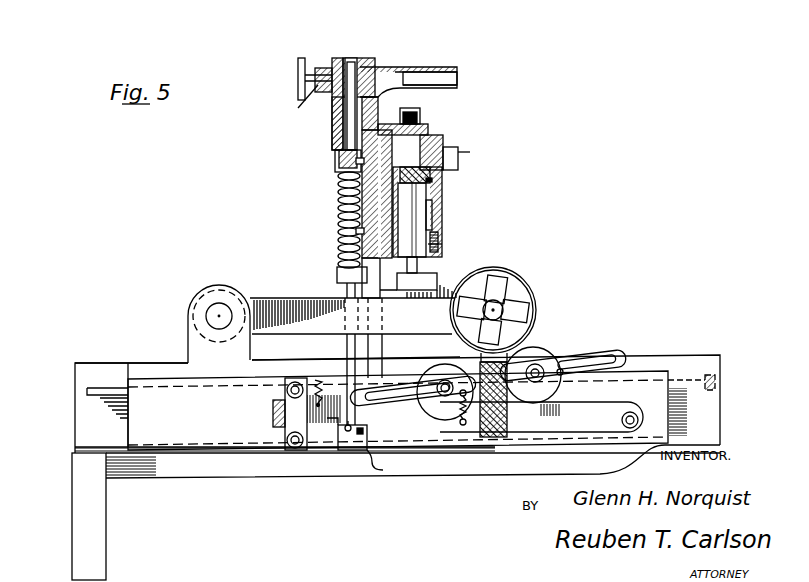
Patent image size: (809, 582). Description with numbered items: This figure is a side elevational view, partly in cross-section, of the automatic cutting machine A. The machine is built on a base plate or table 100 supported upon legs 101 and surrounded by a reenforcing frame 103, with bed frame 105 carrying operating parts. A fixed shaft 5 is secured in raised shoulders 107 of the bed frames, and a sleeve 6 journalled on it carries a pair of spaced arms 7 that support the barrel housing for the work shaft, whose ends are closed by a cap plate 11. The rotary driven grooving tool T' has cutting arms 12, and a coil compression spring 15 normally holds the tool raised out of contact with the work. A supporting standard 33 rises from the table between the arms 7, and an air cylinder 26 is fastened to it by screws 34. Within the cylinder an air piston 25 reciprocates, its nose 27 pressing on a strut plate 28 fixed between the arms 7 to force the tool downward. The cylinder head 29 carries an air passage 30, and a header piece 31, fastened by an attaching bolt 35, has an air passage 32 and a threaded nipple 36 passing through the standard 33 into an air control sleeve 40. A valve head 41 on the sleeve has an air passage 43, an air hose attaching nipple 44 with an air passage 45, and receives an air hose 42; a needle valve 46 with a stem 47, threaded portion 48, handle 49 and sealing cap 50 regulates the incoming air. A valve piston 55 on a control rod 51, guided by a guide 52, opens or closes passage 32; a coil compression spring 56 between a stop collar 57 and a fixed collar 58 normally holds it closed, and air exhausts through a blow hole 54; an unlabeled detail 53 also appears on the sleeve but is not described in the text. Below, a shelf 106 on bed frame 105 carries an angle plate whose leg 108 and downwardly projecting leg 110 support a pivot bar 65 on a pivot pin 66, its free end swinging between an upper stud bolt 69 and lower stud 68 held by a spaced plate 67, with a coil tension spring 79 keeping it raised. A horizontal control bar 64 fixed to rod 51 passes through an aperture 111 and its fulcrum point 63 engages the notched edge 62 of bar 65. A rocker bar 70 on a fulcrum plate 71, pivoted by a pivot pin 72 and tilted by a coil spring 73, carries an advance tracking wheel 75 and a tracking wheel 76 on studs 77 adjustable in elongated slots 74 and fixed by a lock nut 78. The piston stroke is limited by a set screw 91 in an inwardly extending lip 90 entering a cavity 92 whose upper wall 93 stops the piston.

The fixed shaft 5 is at (215, 316).
The sleeve 6 is at (232, 275).
The spaced arms 7 is at (315, 322).
The cap plate 11 is at (527, 278).
The cutting arms 12 is at (490, 285).
The coil compression spring 15 is at (507, 360).
The air piston 25 is at (442, 195).
The air cylinder 26 is at (442, 170).
The nose 27 is at (417, 265).
The strut plate 28 is at (437, 280).
The cylinder head 29 is at (452, 152).
The air passage 30 is at (443, 140).
The header piece 31 is at (432, 130).
The air passage 32 is at (400, 122).
The supporting standard 33 is at (368, 215).
The screws 34 is at (358, 235).
The attaching bolt 35 is at (420, 112).
The threaded nipple 36 is at (380, 122).
The air control sleeve 40 is at (338, 115).
The valve head 41 is at (368, 65).
The air hose 42 is at (445, 72).
The air passage 43 is at (352, 58).
The air hose attaching nipple 44 is at (400, 69).
The air passage 45 is at (420, 72).
The needle valve 46 is at (362, 60).
The stem 47 is at (322, 68).
The threaded portion 48 is at (338, 60).
The handle 49 is at (298, 78).
The sealing cap 50 is at (295, 99).
The control rod 51 is at (347, 290).
The guide 52 is at (337, 165).
The bore 53 is at (340, 125).
The blow hole 54 is at (340, 150).
The valve piston 55 is at (343, 135).
The coil compression spring 56 is at (343, 195).
The stop collar 57 is at (340, 185).
The fixed collar 58 is at (340, 272).
The notched edge 62 is at (335, 428).
The fulcrum point 63 is at (348, 434).
The horizontal control bar 64 is at (360, 436).
The pivot bar 65 is at (541, 417).
The pivot pin 66 is at (630, 428).
The spaced plate 67 is at (285, 440).
The lower stud 68 is at (290, 450).
The upper stud bolt 69 is at (287, 392).
The rocker bar 70 is at (625, 355).
The fulcrum plate 71 is at (470, 420).
The pivot pin 72 is at (510, 425).
The coil spring 73 is at (460, 420).
The elongated slot 74 is at (410, 385).
The advance tracking wheel 75 is at (548, 350).
The tracking wheel 76 is at (425, 375).
The stud 77 is at (445, 380).
The lock nut 78 is at (541, 368).
The coil tension spring 79 is at (316, 380).
The inwardly extending lip 90 is at (415, 247).
The set screw 91 is at (442, 236).
The cavity 92 is at (436, 222).
The upper wall 93 is at (432, 180).
The base plate or table 100 is at (720, 353).
The legs 101 is at (93, 550).
The reenforcing frame 103 is at (182, 478).
The bed frame 105 is at (80, 425).
The shelf 106 is at (87, 390).
The raised shoulders 107 is at (188, 340).
The leg 108 is at (668, 357).
The downwardly projecting leg 110 is at (690, 420).
The aperture 111 is at (383, 470).
The automatic cutting machine A is at (536, 199).
The rotary driven grooving tool T' is at (597, 265).